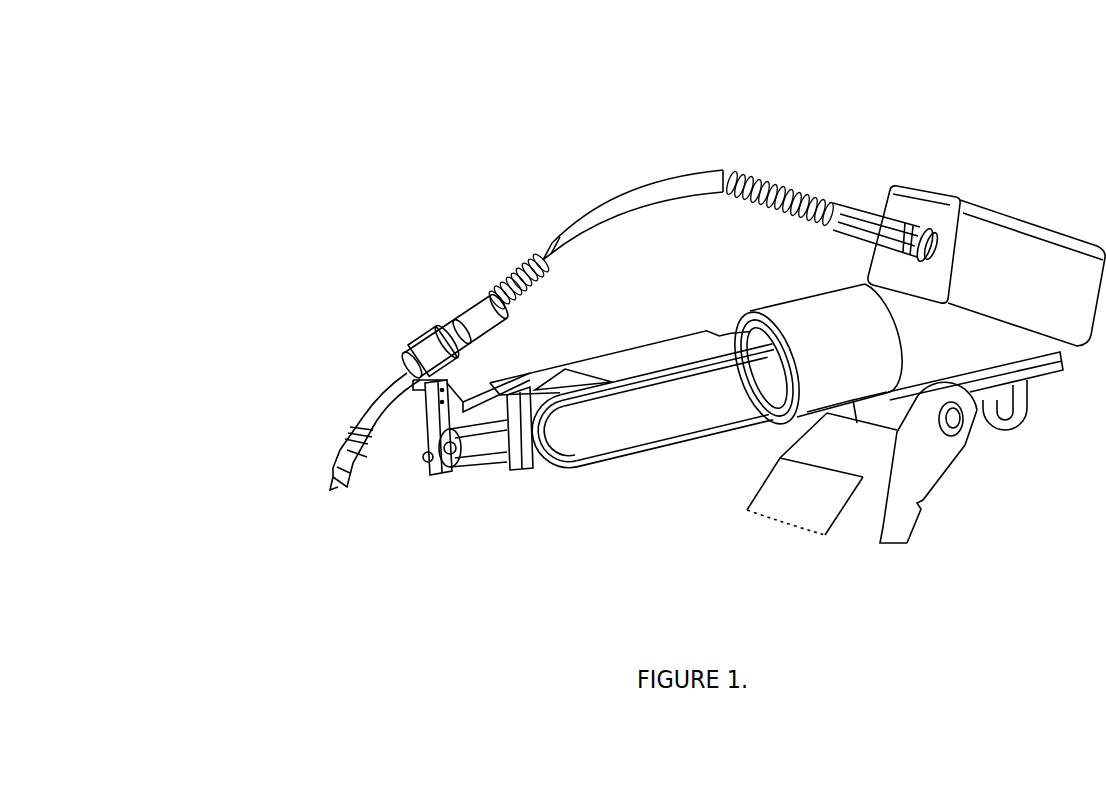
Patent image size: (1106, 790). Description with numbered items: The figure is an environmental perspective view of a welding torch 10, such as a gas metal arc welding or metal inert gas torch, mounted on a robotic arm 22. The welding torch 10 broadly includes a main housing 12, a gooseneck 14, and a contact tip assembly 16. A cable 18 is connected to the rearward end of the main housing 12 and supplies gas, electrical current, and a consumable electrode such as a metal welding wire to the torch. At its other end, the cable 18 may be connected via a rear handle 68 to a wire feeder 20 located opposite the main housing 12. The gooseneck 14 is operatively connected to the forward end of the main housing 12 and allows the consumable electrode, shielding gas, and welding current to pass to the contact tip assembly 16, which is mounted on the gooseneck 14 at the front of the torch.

The welding torch 10 is at (376, 240).
The main housing 12 is at (430, 337).
The gooseneck 14 is at (385, 394).
The contact tip assembly 16 is at (322, 436).
The cable 18 is at (606, 182).
The wire feeder 20 is at (923, 205).
The robotic arm 22 is at (607, 445).
The rear handle 68 is at (865, 172).